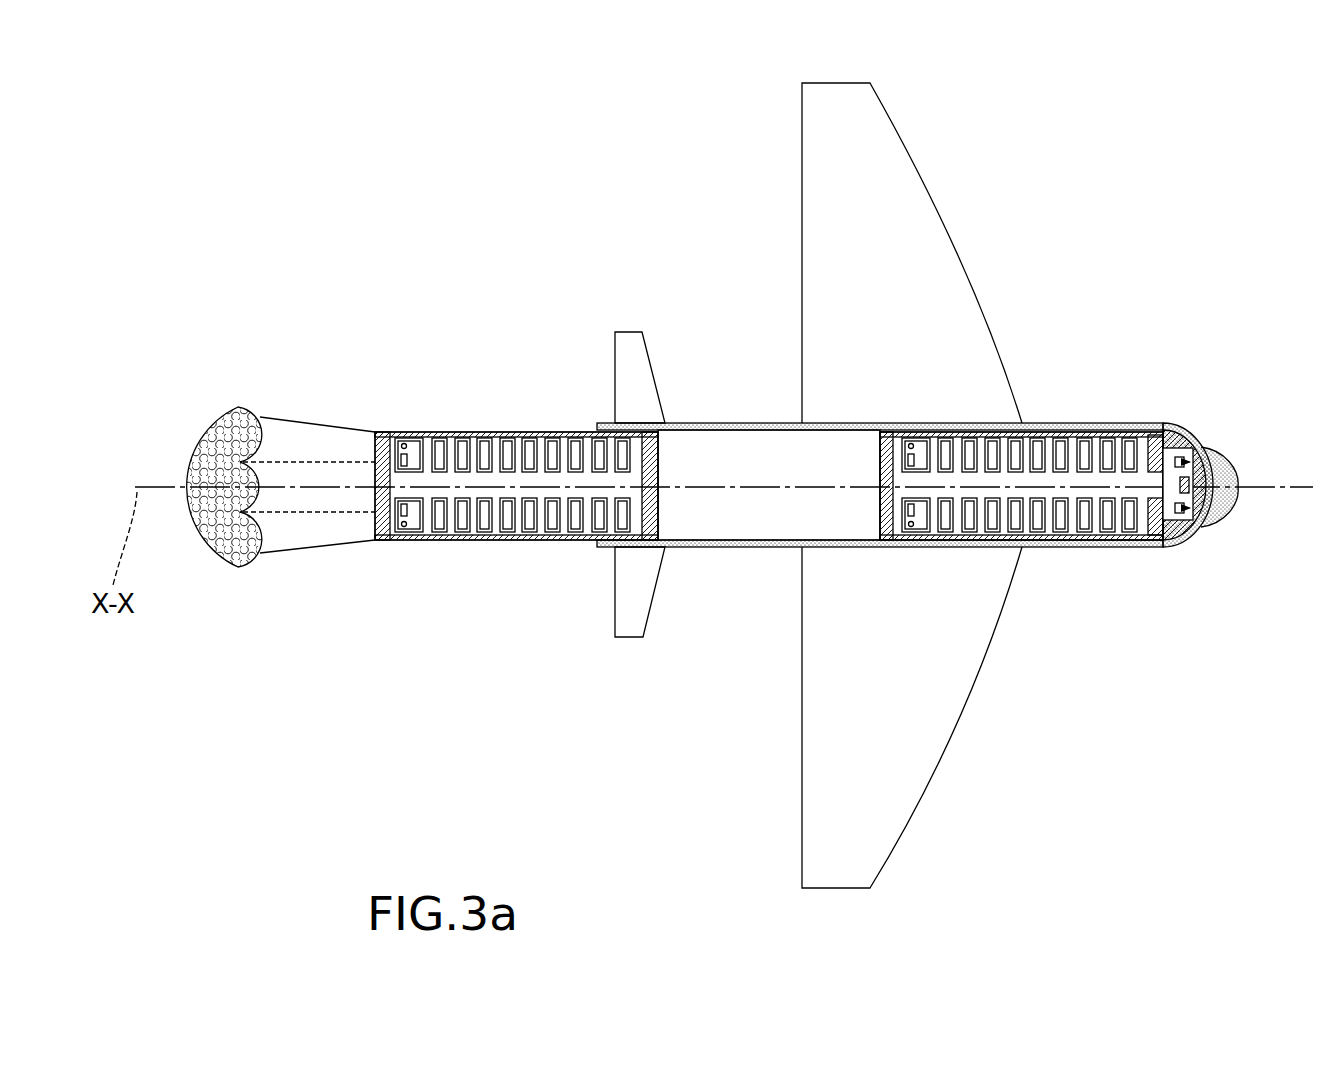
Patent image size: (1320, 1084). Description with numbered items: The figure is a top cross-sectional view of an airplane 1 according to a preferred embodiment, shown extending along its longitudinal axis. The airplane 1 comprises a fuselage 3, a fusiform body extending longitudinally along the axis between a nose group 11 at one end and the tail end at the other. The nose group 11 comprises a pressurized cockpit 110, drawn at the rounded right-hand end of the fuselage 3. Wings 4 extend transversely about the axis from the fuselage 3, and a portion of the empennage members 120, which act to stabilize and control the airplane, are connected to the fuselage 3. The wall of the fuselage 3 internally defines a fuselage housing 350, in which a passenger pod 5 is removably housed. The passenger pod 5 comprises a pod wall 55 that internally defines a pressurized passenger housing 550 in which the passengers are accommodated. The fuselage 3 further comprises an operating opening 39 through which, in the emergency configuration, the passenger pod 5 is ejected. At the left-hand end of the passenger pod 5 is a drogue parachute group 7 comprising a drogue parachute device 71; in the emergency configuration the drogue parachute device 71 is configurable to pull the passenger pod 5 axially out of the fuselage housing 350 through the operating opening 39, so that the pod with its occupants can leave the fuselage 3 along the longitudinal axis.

The airplane 1 is at (505, 140).
The fuselage 3 is at (1098, 410).
The wings 4 is at (880, 165).
The passenger pod 5 is at (516, 453).
The drogue parachute group 7 is at (258, 392).
The nose group 11 is at (1228, 472).
The operating opening 39 is at (592, 543).
The pod wall 55 is at (497, 541).
The drogue parachute device 71 is at (222, 403).
The pressurized cockpit 110 is at (1190, 505).
The empennage members 120 is at (632, 345).
The fuselage housing 350 is at (758, 512).
The pressurized passenger housing 550 is at (497, 482).